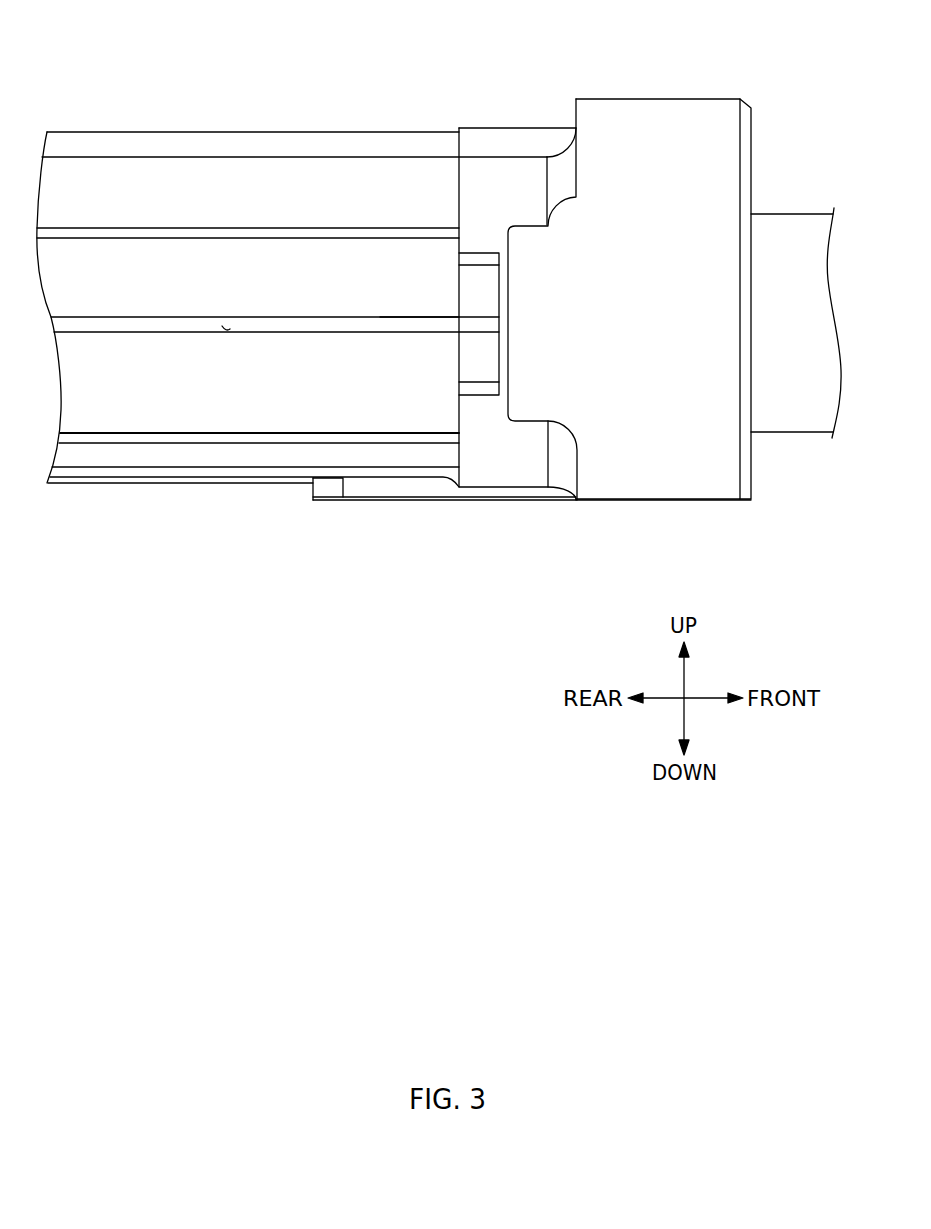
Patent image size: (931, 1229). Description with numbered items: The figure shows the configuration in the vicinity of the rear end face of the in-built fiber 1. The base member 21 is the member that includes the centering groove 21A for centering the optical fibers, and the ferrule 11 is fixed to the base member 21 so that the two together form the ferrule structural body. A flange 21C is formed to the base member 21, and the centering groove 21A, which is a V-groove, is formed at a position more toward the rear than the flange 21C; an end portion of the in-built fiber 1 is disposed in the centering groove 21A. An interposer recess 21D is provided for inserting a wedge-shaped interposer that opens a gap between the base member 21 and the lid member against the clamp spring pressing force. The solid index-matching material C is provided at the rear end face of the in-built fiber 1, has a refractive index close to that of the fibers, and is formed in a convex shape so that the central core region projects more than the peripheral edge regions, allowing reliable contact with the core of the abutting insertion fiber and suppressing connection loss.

The in-built fiber 1 is at (367, 325).
The ferrule 11 is at (788, 224).
The base member 21 is at (287, 132).
The centering groove 21A is at (160, 325).
The flange 21C is at (657, 120).
The interposer recess 21D is at (94, 174).
The solid index-matching material C is at (225, 326).